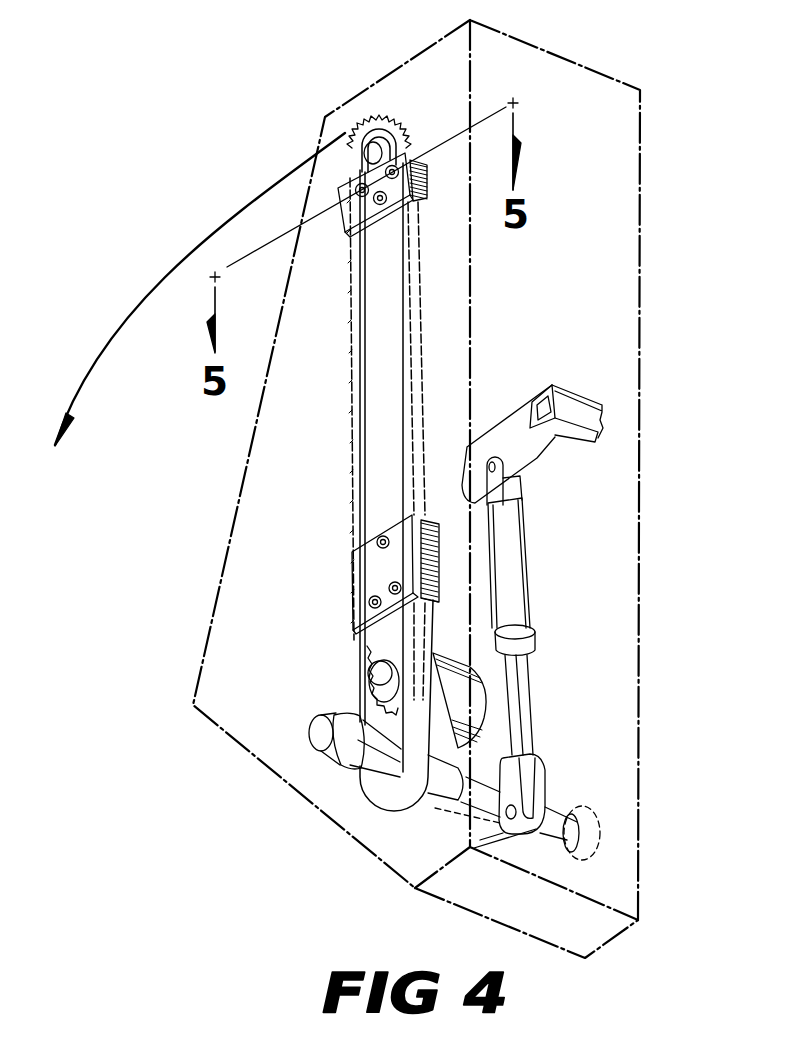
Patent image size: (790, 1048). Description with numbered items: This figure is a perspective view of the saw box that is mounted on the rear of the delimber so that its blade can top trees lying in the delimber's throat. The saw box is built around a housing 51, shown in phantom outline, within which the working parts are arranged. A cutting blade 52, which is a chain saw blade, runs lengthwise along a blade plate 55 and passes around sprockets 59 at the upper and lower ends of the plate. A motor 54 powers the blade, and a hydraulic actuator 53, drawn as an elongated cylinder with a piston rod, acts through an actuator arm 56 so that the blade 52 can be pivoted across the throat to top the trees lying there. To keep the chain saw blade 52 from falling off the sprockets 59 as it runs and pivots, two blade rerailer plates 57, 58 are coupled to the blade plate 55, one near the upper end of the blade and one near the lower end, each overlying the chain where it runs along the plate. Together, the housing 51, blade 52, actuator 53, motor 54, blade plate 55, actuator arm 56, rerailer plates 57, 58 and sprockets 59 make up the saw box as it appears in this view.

The housing 51 is at (627, 397).
The cutting blade 52 is at (350, 405).
The hydraulic actuator 53 is at (528, 584).
The motor 54 is at (488, 723).
The blade plate 55 is at (373, 350).
The actuator arm 56 is at (455, 806).
The blade rerailer plate 57 is at (347, 218).
The blade rerailer plate 58 is at (362, 582).
The sprockets 59 is at (372, 130).